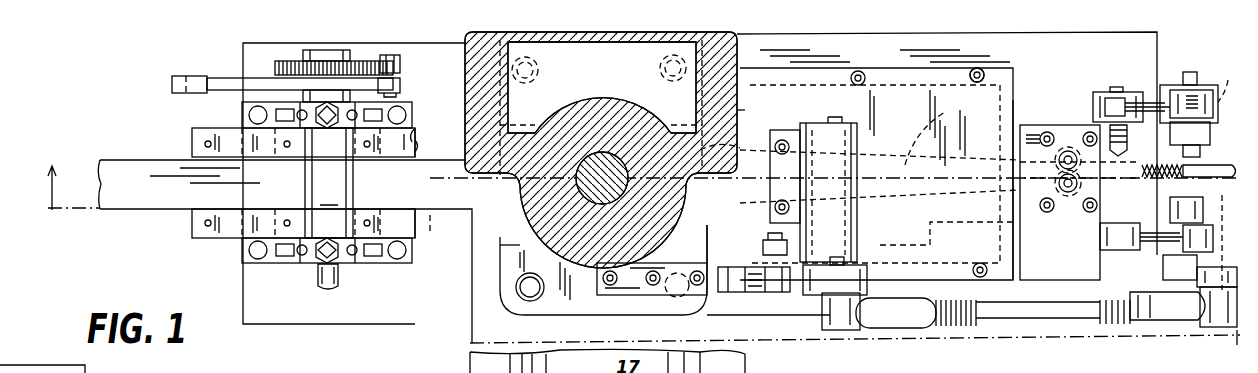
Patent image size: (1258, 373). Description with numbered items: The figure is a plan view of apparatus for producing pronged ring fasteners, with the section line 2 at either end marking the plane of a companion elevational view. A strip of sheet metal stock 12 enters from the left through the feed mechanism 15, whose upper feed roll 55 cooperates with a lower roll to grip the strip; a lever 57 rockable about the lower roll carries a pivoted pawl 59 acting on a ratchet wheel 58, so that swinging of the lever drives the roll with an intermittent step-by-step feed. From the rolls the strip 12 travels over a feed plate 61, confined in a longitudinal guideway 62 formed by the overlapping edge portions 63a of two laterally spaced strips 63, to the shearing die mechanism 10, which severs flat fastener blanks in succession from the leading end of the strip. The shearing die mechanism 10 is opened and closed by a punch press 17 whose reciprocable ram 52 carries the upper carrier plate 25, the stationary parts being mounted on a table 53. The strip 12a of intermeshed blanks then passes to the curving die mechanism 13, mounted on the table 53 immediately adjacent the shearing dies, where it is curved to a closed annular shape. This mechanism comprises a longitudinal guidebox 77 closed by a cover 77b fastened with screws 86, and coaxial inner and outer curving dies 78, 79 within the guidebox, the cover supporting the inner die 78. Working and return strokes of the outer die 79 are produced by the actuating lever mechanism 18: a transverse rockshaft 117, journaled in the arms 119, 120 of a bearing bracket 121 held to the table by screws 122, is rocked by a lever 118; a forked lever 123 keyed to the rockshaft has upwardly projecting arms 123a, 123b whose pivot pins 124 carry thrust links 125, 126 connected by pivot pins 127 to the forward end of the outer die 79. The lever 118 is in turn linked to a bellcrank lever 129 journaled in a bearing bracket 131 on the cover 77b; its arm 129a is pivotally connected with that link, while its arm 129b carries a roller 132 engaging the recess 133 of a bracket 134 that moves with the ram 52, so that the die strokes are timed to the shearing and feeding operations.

The section line 2- 2 is at (642, 255).
The shearing die mechanism 10 is at (534, 268).
The strip of sheet metal stock 12 is at (136, 164).
The strip of fastener blanks 12a is at (835, 186).
The curving die mechanism 13 is at (940, 244).
The feed mechanism 15 is at (318, 184).
The punch press 17 is at (592, 78).
The lever mechanism 18 is at (1173, 323).
The upper carrier plate 25 is at (507, 268).
The ram 52 is at (738, 112).
The table 53 is at (416, 322).
The upper feed roll 55 is at (306, 195).
The lever 57 is at (227, 83).
The ratchet wheel 58 is at (362, 61).
The pivoted pawl 59 is at (400, 60).
The feed plate 61 is at (215, 232).
The longitudinal guideway 62 is at (437, 196).
The laterally spaced strips 63 is at (413, 130).
The overlapping edge portions 63a is at (430, 158).
The longitudinal guidebox 77 is at (928, 66).
The cover 77b is at (1005, 95).
The inner curving die 78 is at (942, 130).
The outer curving die 79 is at (1022, 130).
The screws 86 is at (980, 72).
The transverse rockshaft 117 is at (1215, 165).
The lever 118 is at (1173, 280).
The arm of bearing bracket 119 is at (1170, 252).
The arm of bearing bracket 120 is at (1196, 80).
The bearing bracket 121 is at (1147, 97).
The screws 122 is at (1098, 94).
The forked lever 123 is at (1127, 190).
The lever arm 123a is at (1100, 240).
The lever arm 123b is at (1110, 128).
The pivot pins 124 is at (1223, 80).
The thrust link 125 is at (1163, 252).
The thrust link 126 is at (1165, 88).
The pivot pins 127 is at (1106, 98).
The bellcrank lever 129 is at (858, 246).
The lever arm 129a is at (822, 298).
The lever arm 129b is at (772, 252).
The bearing bracket 131 is at (860, 136).
The roller 132 is at (775, 292).
The recess 133 is at (763, 250).
The bracket 134 is at (748, 286).